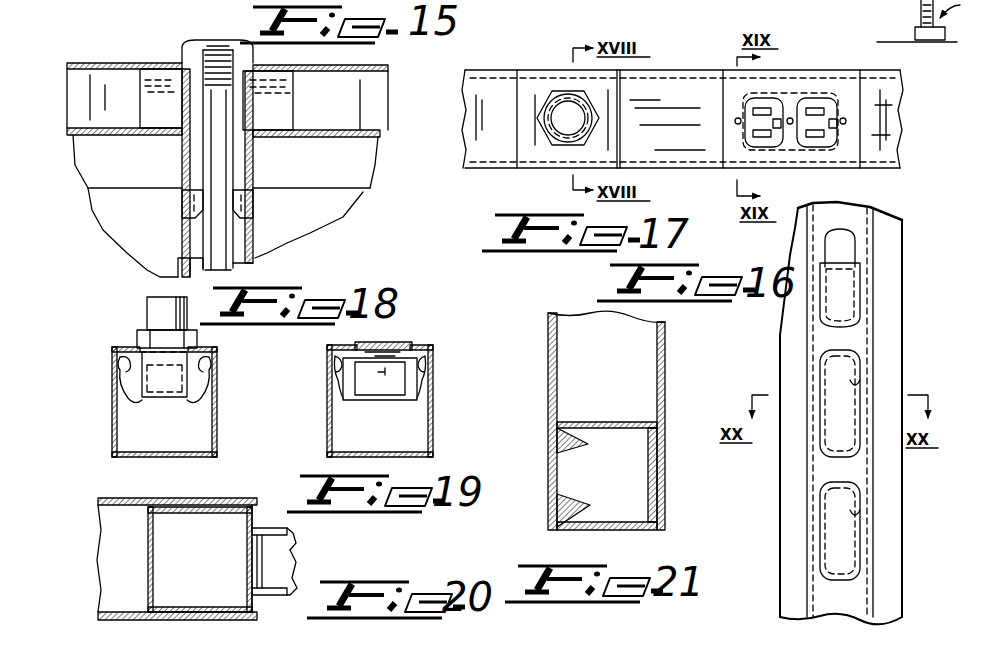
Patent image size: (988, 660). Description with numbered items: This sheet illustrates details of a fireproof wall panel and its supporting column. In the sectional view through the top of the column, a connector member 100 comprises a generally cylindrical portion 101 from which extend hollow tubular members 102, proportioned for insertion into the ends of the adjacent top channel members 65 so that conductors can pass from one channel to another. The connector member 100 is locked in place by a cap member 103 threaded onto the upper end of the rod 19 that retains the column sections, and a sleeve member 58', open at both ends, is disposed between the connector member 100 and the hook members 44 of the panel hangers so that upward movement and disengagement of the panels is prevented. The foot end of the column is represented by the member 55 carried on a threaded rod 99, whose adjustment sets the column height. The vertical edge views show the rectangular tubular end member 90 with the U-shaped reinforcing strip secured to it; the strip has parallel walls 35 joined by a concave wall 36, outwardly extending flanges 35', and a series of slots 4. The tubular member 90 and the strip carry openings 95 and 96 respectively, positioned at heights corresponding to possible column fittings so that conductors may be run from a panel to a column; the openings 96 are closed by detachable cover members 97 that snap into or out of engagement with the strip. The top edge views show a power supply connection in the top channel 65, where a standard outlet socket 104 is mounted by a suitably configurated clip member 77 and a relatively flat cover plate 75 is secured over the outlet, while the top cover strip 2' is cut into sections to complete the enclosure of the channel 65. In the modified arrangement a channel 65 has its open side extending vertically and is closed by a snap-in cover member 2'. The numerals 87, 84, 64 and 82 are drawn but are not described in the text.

In FIG. 15, the connector member 100 is at (157, 58).
In FIG. 15, the cylindrical portion 101 is at (190, 43).
In FIG. 15, the cap member 103 is at (250, 38).
In FIG. 15, the rod 19 is at (213, 98).
In FIG. 15, the hollow tubular members 102 is at (295, 100).
In FIG. 15, the channel member 65 is at (360, 121).
In FIG. 17, the channel member 65 is at (612, 533).
In FIG. 18, the channel member 65 is at (112, 426).
In FIG. 19, the channel member 65 is at (433, 428).
In FIG. 15, the sleeve member 58' is at (242, 173).
In FIG. 15, the hook members 44 is at (242, 205).
In FIG. 16, the stud 87 is at (540, 126).
In FIG. 18, the stud 87 is at (147, 311).
In FIG. 16, the nut 84 is at (597, 118).
In FIG. 18, the nut 84 is at (198, 343).
In FIG. 16, the cover plate 75 is at (533, 158).
In FIG. 18, the cover plate 75 is at (140, 350).
In FIG. 19, the cover plate 75 is at (430, 346).
In FIG. 16, the top cover strip 2' is at (694, 135).
In FIG. 17, the top cover strip 2' is at (551, 477).
In FIG. 16, the outlet socket 104 is at (807, 97).
In FIG. 19, the outlet socket 104 is at (402, 342).
In FIG. 20, the openings 95 is at (245, 569).
In FIG. 21, the openings 95 is at (848, 238).
In FIG. 20, the slots 4 is at (250, 539).
In FIG. 21, the slots 4 is at (873, 267).
In FIG. 20, the flanges 35' is at (246, 545).
In FIG. 21, the flanges 35' is at (859, 413).
In FIG. 20, the cover members 97 is at (293, 560).
In FIG. 21, the cover members 97 is at (826, 370).
In FIG. 20, the openings 96 is at (291, 545).
In FIG. 21, the openings 96 is at (860, 390).
In FIG. 21, the concave wall 36 is at (848, 468).
In FIG. 21, the walls 35 is at (832, 562).
In FIG. 17, the channel wall 64 is at (552, 357).
In FIG. 20, the channel wall 64 is at (135, 497).
In FIG. 18, the clip body 82 is at (163, 386).
In FIG. 18, the clip member 77 is at (203, 400).
In FIG. 19, the clip member 77 is at (415, 401).
In FIG. 20, the tubular end members 90 is at (148, 557).
In FIG. 16, the threaded rod 99 is at (921, 12).
In FIG. 16, the member 55 is at (915, 35).